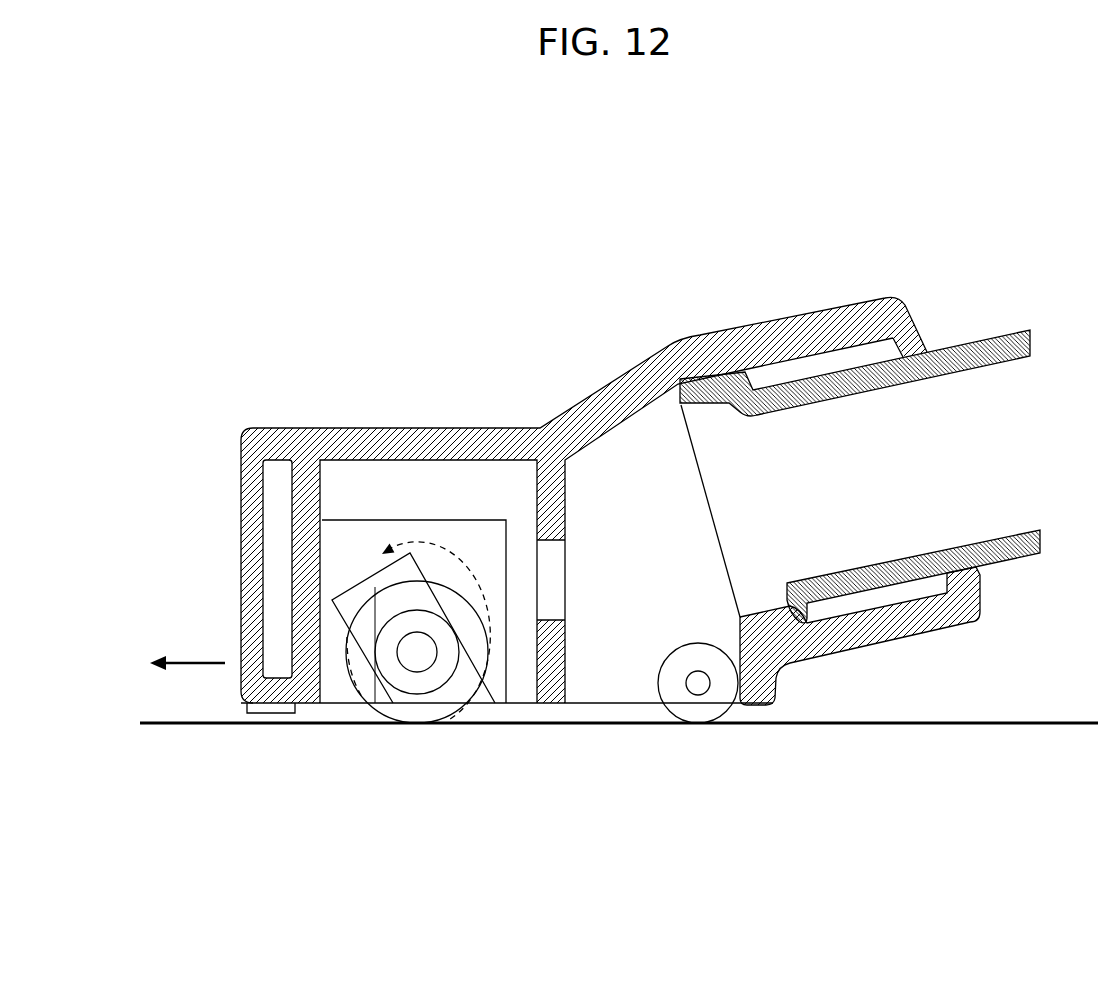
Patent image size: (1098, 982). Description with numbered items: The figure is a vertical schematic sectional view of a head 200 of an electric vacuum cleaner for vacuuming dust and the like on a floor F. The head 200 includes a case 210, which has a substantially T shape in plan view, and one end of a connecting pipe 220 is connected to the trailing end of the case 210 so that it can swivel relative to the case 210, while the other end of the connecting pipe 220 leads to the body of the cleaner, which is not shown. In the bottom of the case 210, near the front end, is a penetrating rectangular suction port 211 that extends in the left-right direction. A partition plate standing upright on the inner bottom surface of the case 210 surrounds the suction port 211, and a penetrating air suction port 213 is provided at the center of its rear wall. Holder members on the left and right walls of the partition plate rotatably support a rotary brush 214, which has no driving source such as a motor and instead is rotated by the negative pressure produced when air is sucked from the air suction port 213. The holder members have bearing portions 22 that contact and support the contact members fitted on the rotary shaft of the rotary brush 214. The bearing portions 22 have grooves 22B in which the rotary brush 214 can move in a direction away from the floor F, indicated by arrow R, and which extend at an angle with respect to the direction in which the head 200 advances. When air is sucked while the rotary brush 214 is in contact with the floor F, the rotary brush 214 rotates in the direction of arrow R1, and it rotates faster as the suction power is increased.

The head 200 is at (357, 216).
The case 210 is at (273, 432).
The suction port 211 is at (519, 676).
The air suction port 213 is at (547, 588).
The rotary brush 214 is at (457, 683).
The connecting pipe 220 is at (930, 346).
The bearing portion 22 is at (362, 550).
The groove 22B is at (375, 587).
The arrow R1 is at (421, 624).
The arrow R is at (187, 647).
The floor F is at (995, 722).